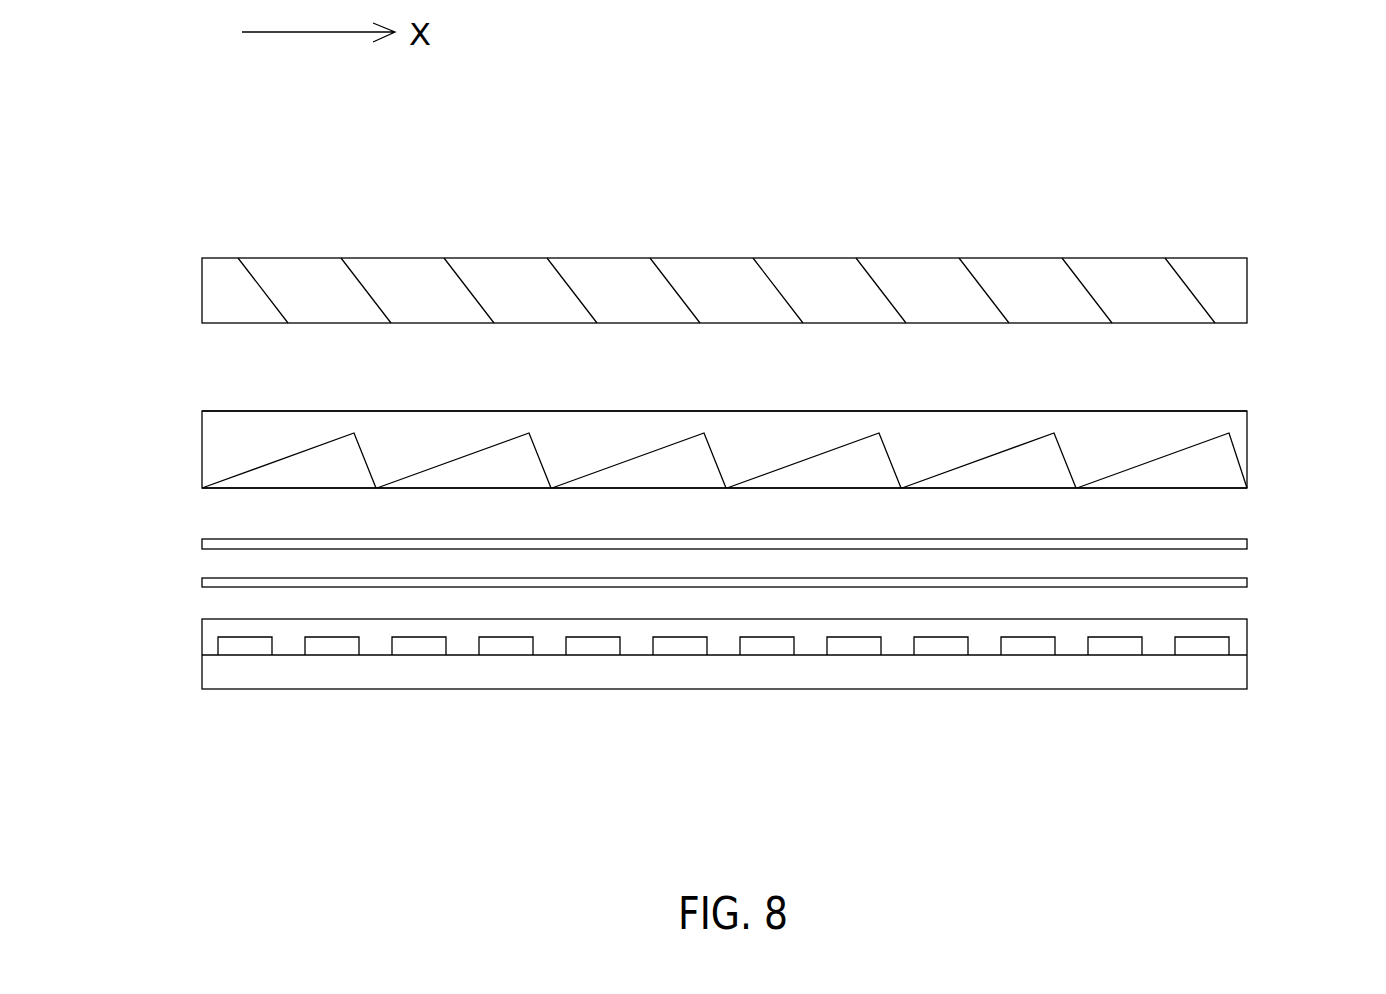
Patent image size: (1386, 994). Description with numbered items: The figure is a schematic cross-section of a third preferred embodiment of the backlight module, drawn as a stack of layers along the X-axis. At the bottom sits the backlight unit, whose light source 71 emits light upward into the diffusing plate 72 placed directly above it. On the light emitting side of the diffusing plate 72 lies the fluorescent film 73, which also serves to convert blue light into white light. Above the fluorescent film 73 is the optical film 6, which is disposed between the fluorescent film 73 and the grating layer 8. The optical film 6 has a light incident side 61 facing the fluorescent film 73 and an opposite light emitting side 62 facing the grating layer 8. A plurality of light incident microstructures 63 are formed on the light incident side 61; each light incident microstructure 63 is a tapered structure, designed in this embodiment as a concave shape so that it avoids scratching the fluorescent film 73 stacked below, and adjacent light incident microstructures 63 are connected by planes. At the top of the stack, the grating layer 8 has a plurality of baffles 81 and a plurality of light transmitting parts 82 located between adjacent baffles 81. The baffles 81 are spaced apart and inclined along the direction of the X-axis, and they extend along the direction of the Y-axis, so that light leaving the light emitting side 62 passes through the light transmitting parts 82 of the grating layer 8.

The grating layer 8 is at (1252, 288).
The baffles 81 is at (258, 280).
The light transmitting parts 82 is at (660, 197).
The optical film 6 is at (1252, 440).
The light emitting side 62 is at (230, 408).
The light incident side 61 is at (233, 490).
The light incident microstructures 63 is at (608, 378).
The fluorescent film 73 is at (1247, 543).
The diffusing plate 72 is at (1247, 582).
The light source 71 is at (1252, 658).